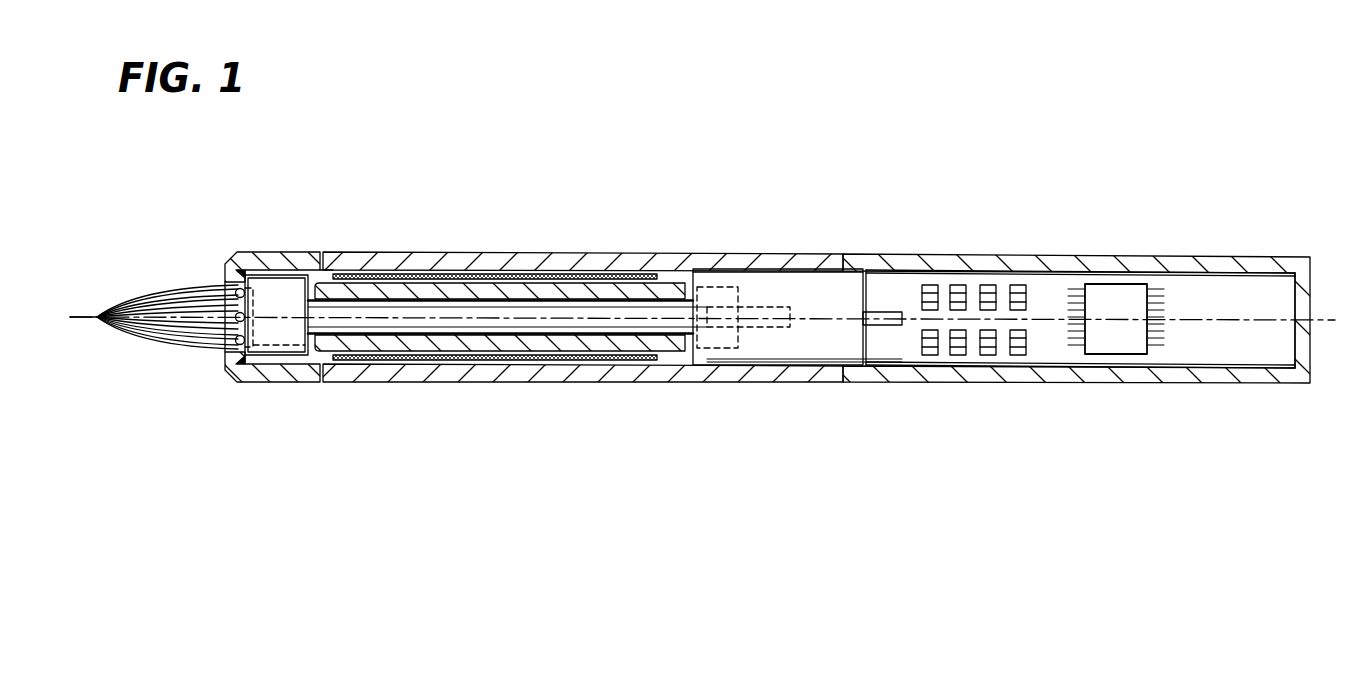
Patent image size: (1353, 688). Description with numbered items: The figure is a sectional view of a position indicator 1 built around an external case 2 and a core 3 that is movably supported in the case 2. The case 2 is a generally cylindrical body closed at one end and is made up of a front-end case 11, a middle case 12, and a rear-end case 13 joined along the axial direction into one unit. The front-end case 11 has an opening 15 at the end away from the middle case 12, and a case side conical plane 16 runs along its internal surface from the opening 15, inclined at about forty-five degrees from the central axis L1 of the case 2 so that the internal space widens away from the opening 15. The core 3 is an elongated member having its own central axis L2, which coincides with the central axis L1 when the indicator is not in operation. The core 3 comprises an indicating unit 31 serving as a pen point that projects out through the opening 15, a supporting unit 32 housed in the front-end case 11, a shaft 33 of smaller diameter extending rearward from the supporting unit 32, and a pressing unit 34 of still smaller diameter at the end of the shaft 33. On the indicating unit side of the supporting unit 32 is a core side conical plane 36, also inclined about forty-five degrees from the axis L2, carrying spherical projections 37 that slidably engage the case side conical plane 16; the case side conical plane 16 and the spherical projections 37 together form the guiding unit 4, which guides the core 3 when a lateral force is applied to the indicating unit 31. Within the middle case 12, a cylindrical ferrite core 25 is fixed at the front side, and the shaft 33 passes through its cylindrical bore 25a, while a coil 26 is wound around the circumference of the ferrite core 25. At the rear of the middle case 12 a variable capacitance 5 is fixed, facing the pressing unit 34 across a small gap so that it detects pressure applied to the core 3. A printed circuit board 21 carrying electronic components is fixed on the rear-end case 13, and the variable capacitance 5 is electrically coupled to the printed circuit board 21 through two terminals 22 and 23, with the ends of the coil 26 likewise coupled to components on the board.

The position indicator 1 is at (1250, 206).
The external case 2 is at (1013, 248).
The core 3 is at (170, 352).
The guiding unit 4 is at (248, 369).
The variable capacitance 5 is at (799, 281).
The front-end case 11 is at (303, 262).
The middle case 12 is at (661, 266).
The rear-end case 13 is at (911, 259).
The opening 15 is at (226, 353).
The case side conical plane 16 is at (251, 266).
The printed circuit board 21 is at (1197, 283).
The terminal 22 is at (910, 353).
The terminal 23 is at (872, 310).
The ferrite core 25 is at (538, 290).
The cylindrical bore 25a is at (466, 297).
The coil 26 is at (401, 274).
The indicating unit 31 is at (176, 302).
The supporting unit 32 is at (290, 355).
The shaft 33 is at (513, 325).
The pressing unit 34 is at (745, 305).
The core side conical plane 36 is at (237, 302).
The spherical projection 37 is at (228, 335).
The central axis of the case L1 is at (82, 316).
The central axis of the core L2 is at (145, 247).